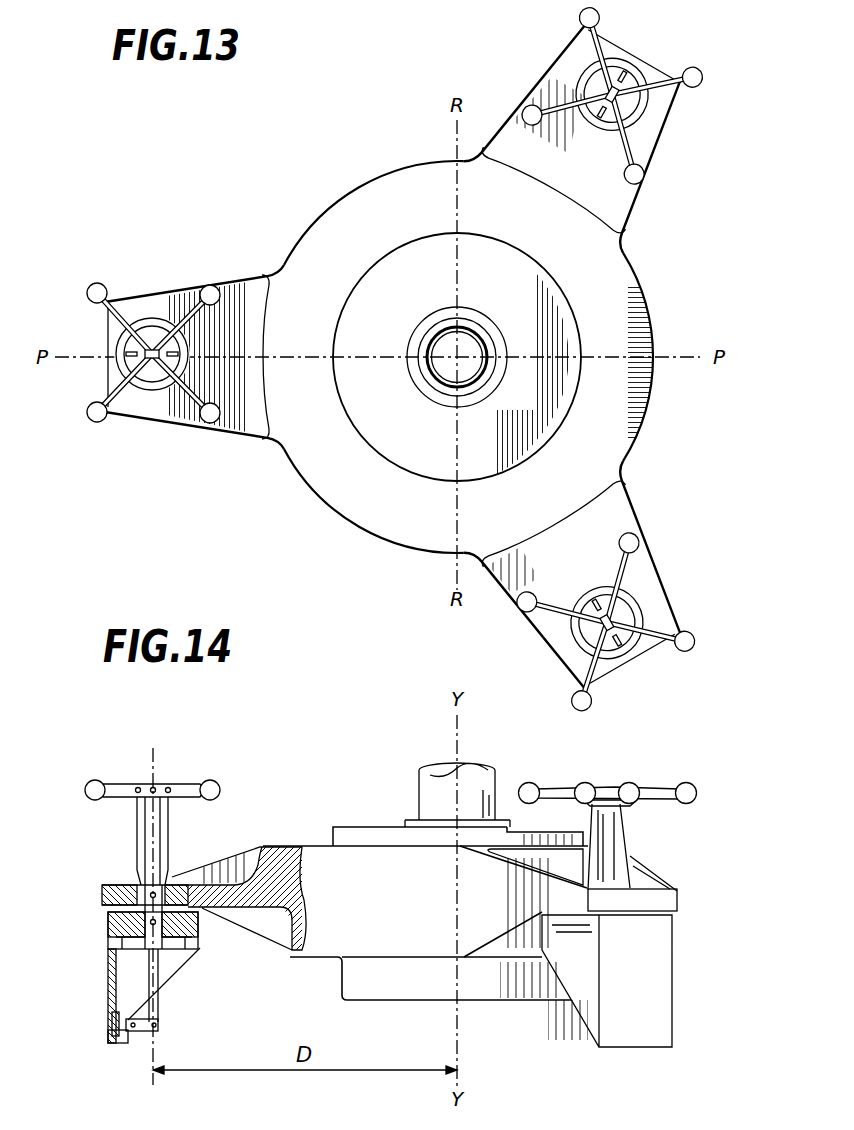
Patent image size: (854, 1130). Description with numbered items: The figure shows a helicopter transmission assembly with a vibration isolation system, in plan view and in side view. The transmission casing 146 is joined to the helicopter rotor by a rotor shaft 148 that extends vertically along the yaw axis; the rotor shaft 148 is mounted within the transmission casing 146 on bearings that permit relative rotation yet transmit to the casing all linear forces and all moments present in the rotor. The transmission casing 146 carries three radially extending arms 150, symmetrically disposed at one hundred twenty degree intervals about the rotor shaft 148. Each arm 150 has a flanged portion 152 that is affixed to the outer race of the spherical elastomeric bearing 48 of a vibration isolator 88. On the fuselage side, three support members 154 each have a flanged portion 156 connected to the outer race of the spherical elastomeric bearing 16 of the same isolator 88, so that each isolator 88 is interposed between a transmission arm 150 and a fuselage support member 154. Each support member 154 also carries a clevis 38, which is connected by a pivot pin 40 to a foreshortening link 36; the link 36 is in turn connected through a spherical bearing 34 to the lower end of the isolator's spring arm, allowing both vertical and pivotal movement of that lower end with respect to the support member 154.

In FIG. 14, the spherical elastomeric bearing 16 is at (108, 935).
In FIG. 14, the spherical bearing 34 is at (157, 1026).
In FIG. 14, the foreshortening link 36 is at (144, 1034).
In FIG. 14, the clevis 38 is at (126, 1018).
In FIG. 14, the pivot pin 40 is at (126, 1035).
In FIG. 14, the spherical elastomeric bearing 48 is at (132, 880).
In FIG. 13, the vibration isolator 88 is at (194, 341).
In FIG. 14, the vibration isolator 88 is at (184, 846).
In FIG. 13, the transmission casing 146 is at (636, 306).
In FIG. 14, the transmission casing 146 is at (482, 980).
In FIG. 13, the rotor shaft 148 is at (478, 332).
In FIG. 14, the rotor shaft 148 is at (428, 778).
In FIG. 13, the radially extending arm 150 is at (248, 278).
In FIG. 14, the radially extending arm 150 is at (680, 895).
In FIG. 13, the flanged portion 152 is at (245, 408).
In FIG. 14, the flanged portion 152 is at (248, 884).
In FIG. 14, the support member 154 is at (667, 982).
In FIG. 14, the flanged portion 156 is at (198, 937).